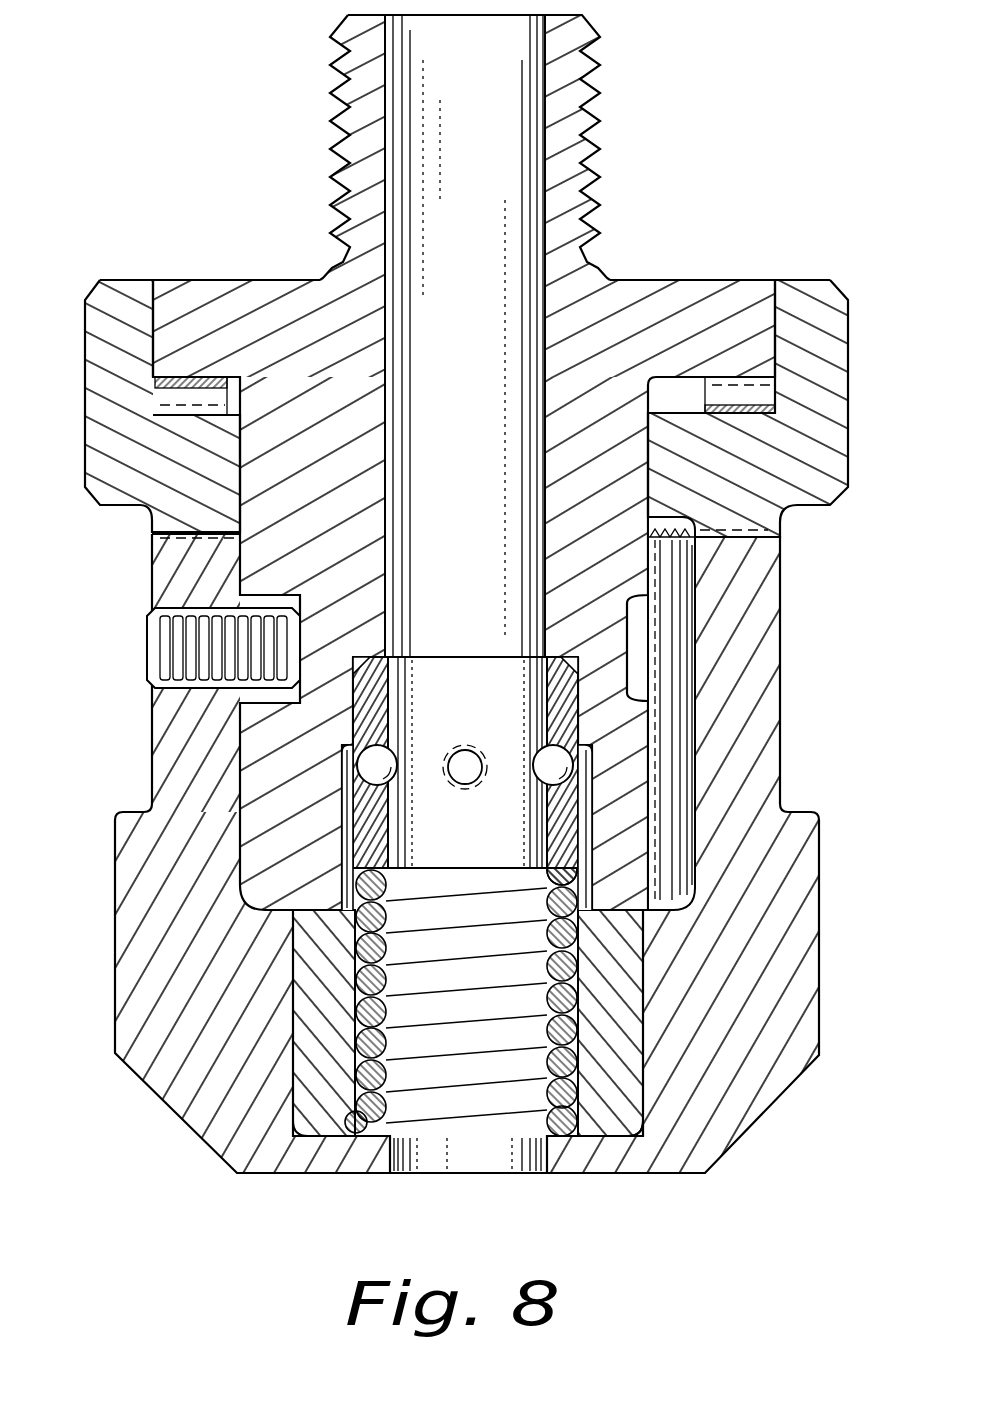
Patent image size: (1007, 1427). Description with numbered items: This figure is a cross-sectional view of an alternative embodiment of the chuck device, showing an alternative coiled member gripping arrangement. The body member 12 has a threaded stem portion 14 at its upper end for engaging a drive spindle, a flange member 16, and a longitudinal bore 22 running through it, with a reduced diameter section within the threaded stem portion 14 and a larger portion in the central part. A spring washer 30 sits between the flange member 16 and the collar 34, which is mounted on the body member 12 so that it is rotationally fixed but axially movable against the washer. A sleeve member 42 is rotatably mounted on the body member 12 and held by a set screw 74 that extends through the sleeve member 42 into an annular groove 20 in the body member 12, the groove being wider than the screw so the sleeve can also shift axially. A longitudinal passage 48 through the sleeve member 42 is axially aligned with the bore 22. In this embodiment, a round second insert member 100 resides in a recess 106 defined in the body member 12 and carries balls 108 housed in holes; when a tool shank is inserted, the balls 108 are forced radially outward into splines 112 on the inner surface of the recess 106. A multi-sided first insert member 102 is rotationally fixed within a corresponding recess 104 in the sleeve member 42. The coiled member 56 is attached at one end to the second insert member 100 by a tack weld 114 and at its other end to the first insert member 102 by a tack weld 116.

The body member 12 is at (680, 302).
The threaded stem portion 14 is at (600, 178).
The flange member 16 is at (238, 300).
The annular groove 20 is at (668, 640).
The longitudinal bore 22 is at (492, 632).
The spring washer 30 is at (180, 402).
The collar 34 is at (833, 403).
The sleeve member 42 is at (782, 668).
The longitudinal passage 48 is at (470, 1155).
The coiled member 56 is at (362, 1014).
The set screw 74 is at (162, 638).
The second insert member 100 is at (378, 845).
The first insert member 102 is at (318, 1062).
The recess 104 is at (627, 1138).
The recess 106 is at (362, 698).
The balls 108 is at (504, 702).
The splines 112 is at (592, 800).
The tack weld 114 is at (590, 858).
The tack weld 116 is at (350, 1124).